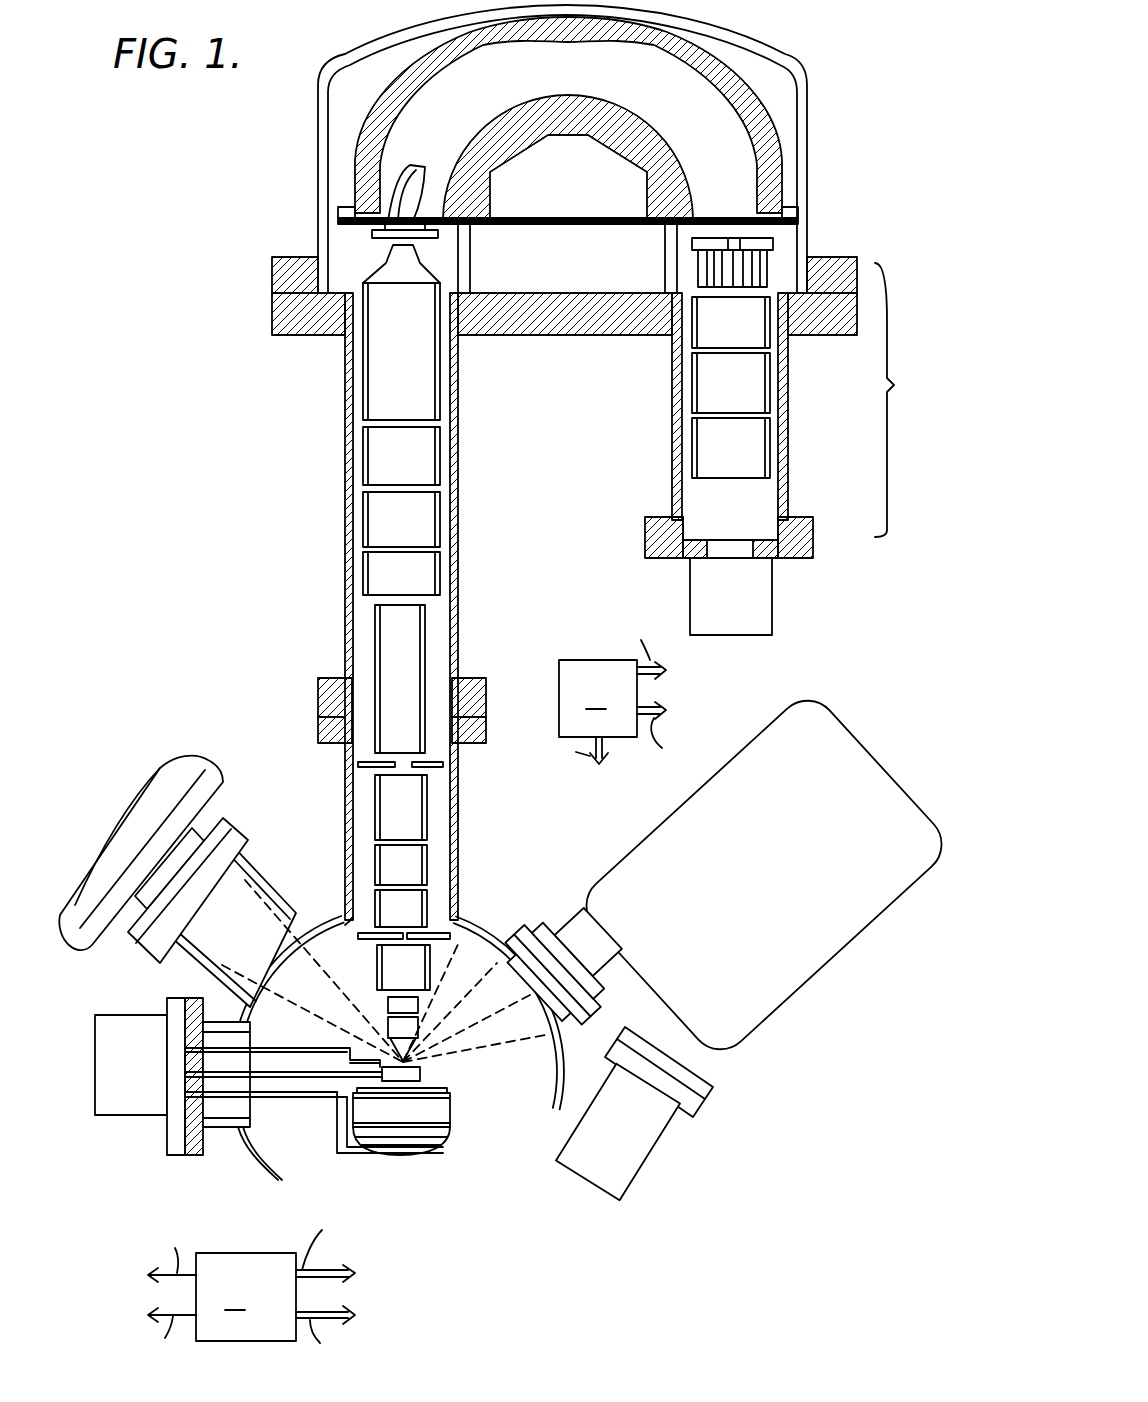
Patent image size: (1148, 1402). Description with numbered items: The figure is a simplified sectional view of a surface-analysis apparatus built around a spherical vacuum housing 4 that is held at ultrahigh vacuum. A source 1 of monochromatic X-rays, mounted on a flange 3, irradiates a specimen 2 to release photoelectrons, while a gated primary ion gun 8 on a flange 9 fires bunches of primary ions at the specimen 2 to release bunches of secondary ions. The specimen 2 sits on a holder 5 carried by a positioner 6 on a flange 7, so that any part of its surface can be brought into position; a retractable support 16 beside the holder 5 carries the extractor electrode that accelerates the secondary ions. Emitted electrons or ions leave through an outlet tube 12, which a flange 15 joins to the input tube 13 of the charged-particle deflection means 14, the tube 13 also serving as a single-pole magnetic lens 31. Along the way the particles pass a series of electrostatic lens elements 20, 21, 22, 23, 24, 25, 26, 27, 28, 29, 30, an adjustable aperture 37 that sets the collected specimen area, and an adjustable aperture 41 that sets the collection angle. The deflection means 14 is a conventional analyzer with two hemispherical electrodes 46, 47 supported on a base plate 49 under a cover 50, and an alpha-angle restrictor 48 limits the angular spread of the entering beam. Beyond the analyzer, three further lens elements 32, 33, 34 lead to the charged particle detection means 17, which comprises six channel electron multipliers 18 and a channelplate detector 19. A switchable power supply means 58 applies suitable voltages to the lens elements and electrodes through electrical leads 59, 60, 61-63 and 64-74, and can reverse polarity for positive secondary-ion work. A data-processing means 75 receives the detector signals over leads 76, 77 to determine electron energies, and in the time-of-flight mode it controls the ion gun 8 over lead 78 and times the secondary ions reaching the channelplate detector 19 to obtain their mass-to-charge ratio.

The source of monochromatic X-rays 1 is at (792, 990).
The specimen 2 is at (430, 1040).
The flange 3 is at (533, 913).
The spherical vacuum housing 4 is at (258, 1157).
The holder 5 is at (420, 1075).
The positioner 6 is at (137, 1083).
The flange 7 is at (190, 1153).
The primary ion gun 8 is at (160, 781).
The flange 9 is at (240, 833).
The outlet tube 12 is at (460, 810).
The input tube 13 is at (458, 535).
The charged-particle deflection means 14 is at (560, 82).
The flange 15 is at (483, 740).
The retractable support 16 is at (290, 1053).
The charged particle detection means 17 is at (804, 400).
The channel electron multipliers 18 is at (762, 263).
The channelplate detector 19 is at (740, 530).
The electrostatic lens element 20 is at (383, 1037).
The electrostatic lens element 21 is at (350, 950).
The electrostatic lens element 22 is at (460, 950).
The electrostatic lens element 23 is at (413, 902).
The electrostatic lens element 24 is at (413, 863).
The electrostatic lens element 25 is at (413, 807).
The electrostatic lens element 26 is at (383, 628).
The electrostatic lens element 27 is at (380, 568).
The electrostatic lens element 28 is at (377, 508).
The electrostatic lens element 29 is at (375, 447).
The electrostatic lens element 30 is at (383, 365).
The magnetic lens 31 is at (440, 1108).
The lens element 32 is at (703, 330).
The lens element 33 is at (703, 380).
The lens element 34 is at (707, 438).
The adjustable aperture 37 is at (367, 930).
The adjustable aperture 41 is at (370, 769).
The hemispherical electrode 46 is at (707, 62).
The hemispherical electrode 47 is at (652, 148).
The alpha-angle restrictor 48 is at (392, 217).
The base plate 49 is at (272, 313).
The cover 50 is at (317, 108).
The switchable power supply means 58 is at (263, 1297).
The electrical lead 59 is at (161, 1248).
The electrical lead 60 is at (159, 1342).
The electrical leads 64-74 is at (345, 1237).
The electrical leads 61-63 is at (349, 1346).
The data-processing means 75 is at (633, 725).
The electrical lead 76 is at (632, 639).
The electrical lead 77 is at (673, 738).
The lead 78 is at (566, 758).